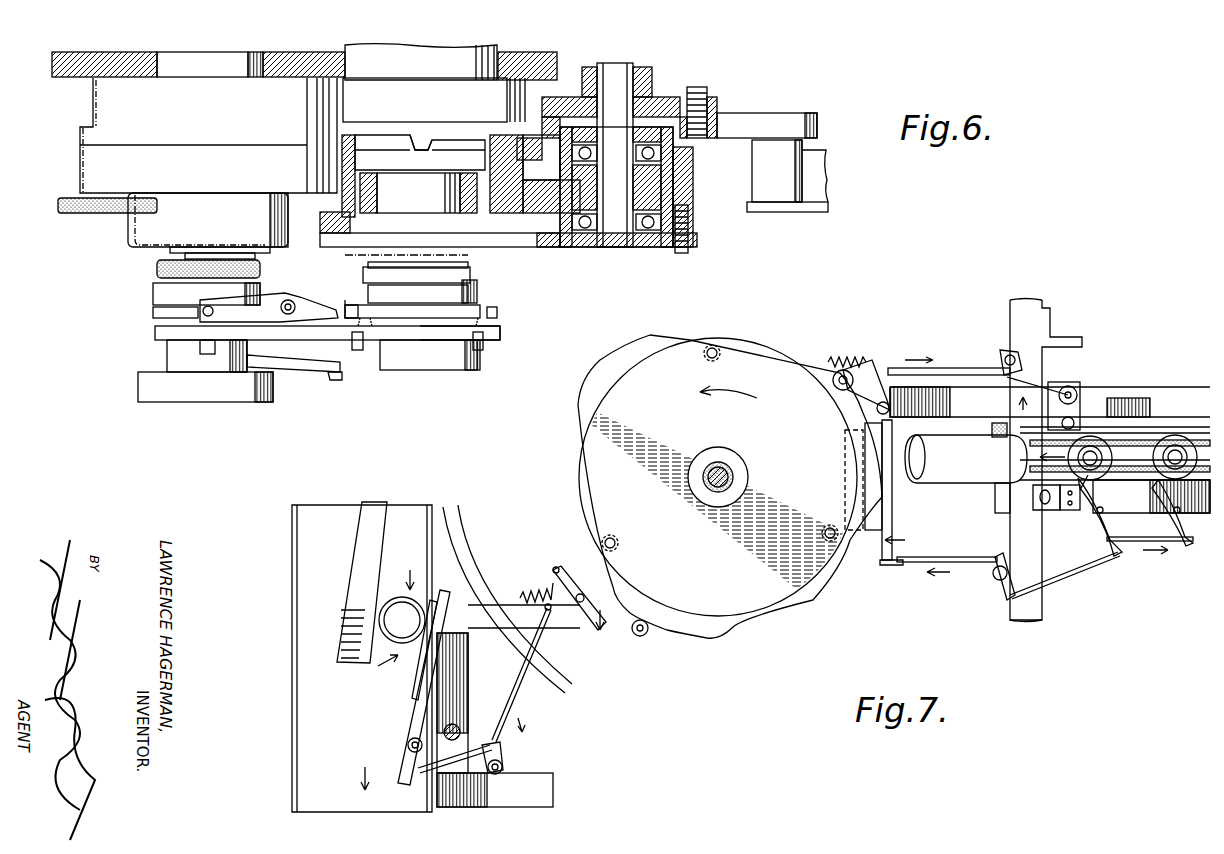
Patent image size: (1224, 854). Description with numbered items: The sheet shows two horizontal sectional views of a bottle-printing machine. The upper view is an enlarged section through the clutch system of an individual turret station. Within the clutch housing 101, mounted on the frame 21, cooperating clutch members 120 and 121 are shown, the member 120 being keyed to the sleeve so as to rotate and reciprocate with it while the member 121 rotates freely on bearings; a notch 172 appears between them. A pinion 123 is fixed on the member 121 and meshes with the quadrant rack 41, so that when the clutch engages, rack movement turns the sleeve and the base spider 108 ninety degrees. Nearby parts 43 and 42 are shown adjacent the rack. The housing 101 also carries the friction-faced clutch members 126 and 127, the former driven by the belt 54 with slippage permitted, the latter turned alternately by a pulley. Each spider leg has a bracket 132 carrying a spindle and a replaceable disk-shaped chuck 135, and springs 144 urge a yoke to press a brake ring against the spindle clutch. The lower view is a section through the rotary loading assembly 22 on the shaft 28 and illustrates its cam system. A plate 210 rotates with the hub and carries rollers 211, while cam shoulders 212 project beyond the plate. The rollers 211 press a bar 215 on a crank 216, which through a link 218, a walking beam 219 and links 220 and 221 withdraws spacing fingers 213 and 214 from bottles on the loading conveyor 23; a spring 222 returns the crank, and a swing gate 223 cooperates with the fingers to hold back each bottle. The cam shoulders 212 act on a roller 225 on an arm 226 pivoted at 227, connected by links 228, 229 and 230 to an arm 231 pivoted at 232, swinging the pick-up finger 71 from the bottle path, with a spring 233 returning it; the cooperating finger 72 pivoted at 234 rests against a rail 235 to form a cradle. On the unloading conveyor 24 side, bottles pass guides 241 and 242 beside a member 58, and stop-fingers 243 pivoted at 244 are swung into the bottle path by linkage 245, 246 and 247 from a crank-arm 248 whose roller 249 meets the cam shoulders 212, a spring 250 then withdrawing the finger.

In FIG. 6, the clutch housing 101 is at (388, 72).
In FIG. 6, the frame 21 is at (540, 55).
In FIG. 7, the frame 21 is at (1042, 608).
In FIG. 6, the clutch member 120 is at (392, 122).
In FIG. 6, the clutch member 121 is at (420, 152).
In FIG. 6, the notch 172 is at (420, 132).
In FIG. 6, the pinion 123 is at (377, 188).
In FIG. 6, the quadrant rack 41 is at (535, 190).
In FIG. 6, the arm 43 is at (766, 118).
In FIG. 6, the block 42 is at (820, 186).
In FIG. 6, the belt 54 is at (95, 212).
In FIG. 6, the clutch member 126 is at (157, 262).
In FIG. 6, the bracket 132 is at (160, 330).
In FIG. 6, the springs 144 is at (500, 333).
In FIG. 6, the chuck 135 is at (210, 390).
In FIG. 6, the base spider 108 is at (315, 362).
In FIG. 6, the clutch member 127 is at (345, 258).
In FIG. 7, the rotary loading assembly 22 is at (774, 325).
In FIG. 7, the plate 210 is at (580, 476).
In FIG. 7, the rollers 211 is at (718, 350).
In FIG. 7, the cam shoulders 212 is at (578, 405).
In FIG. 7, the shaft 28 is at (722, 468).
In FIG. 7, the bar 215 is at (868, 532).
In FIG. 7, the crank 216 is at (845, 426).
In FIG. 7, the roller 225 is at (827, 364).
In FIG. 7, the arm 226 is at (865, 362).
In FIG. 7, the spring 233 is at (848, 355).
In FIG. 7, the pivot 227 is at (890, 405).
In FIG. 7, the link 228 is at (947, 368).
In FIG. 7, the link 229 is at (1003, 355).
In FIG. 7, the link 230 is at (1020, 365).
In FIG. 7, the arm 231 is at (1068, 388).
In FIG. 7, the pivot 232 is at (1074, 420).
In FIG. 7, the swing gate 223 is at (1110, 440).
In FIG. 7, the loading conveyor 23 is at (1155, 432).
In FIG. 7, the finger 71 is at (1005, 425).
In FIG. 7, the spring 222 is at (920, 432).
In FIG. 7, the finger 72 is at (1033, 497).
In FIG. 7, the pivot 234 is at (1033, 505).
In FIG. 7, the rail 235 is at (1086, 510).
In FIG. 7, the spacing finger 213 is at (1105, 540).
In FIG. 7, the spacing finger 214 is at (1192, 542).
In FIG. 7, the link 221 is at (1133, 542).
In FIG. 7, the link 220 is at (1070, 572).
In FIG. 7, the walking beam 219 is at (1005, 593).
In FIG. 7, the link 218 is at (958, 563).
In FIG. 7, the unloading conveyor 24 is at (292, 571).
In FIG. 7, the guide 241 is at (362, 552).
In FIG. 7, the guide 58 is at (458, 525).
In FIG. 7, the spring 250 is at (507, 600).
In FIG. 7, the guide 242 is at (425, 645).
In FIG. 7, the stop-finger 243 is at (408, 688).
In FIG. 7, the pivot 244 is at (408, 745).
In FIG. 7, the linkage 245 is at (458, 795).
In FIG. 7, the linkage 246 is at (503, 750).
In FIG. 7, the linkage 247 is at (522, 690).
In FIG. 7, the crank-arm 248 is at (604, 630).
In FIG. 7, the roller 249 is at (645, 636).